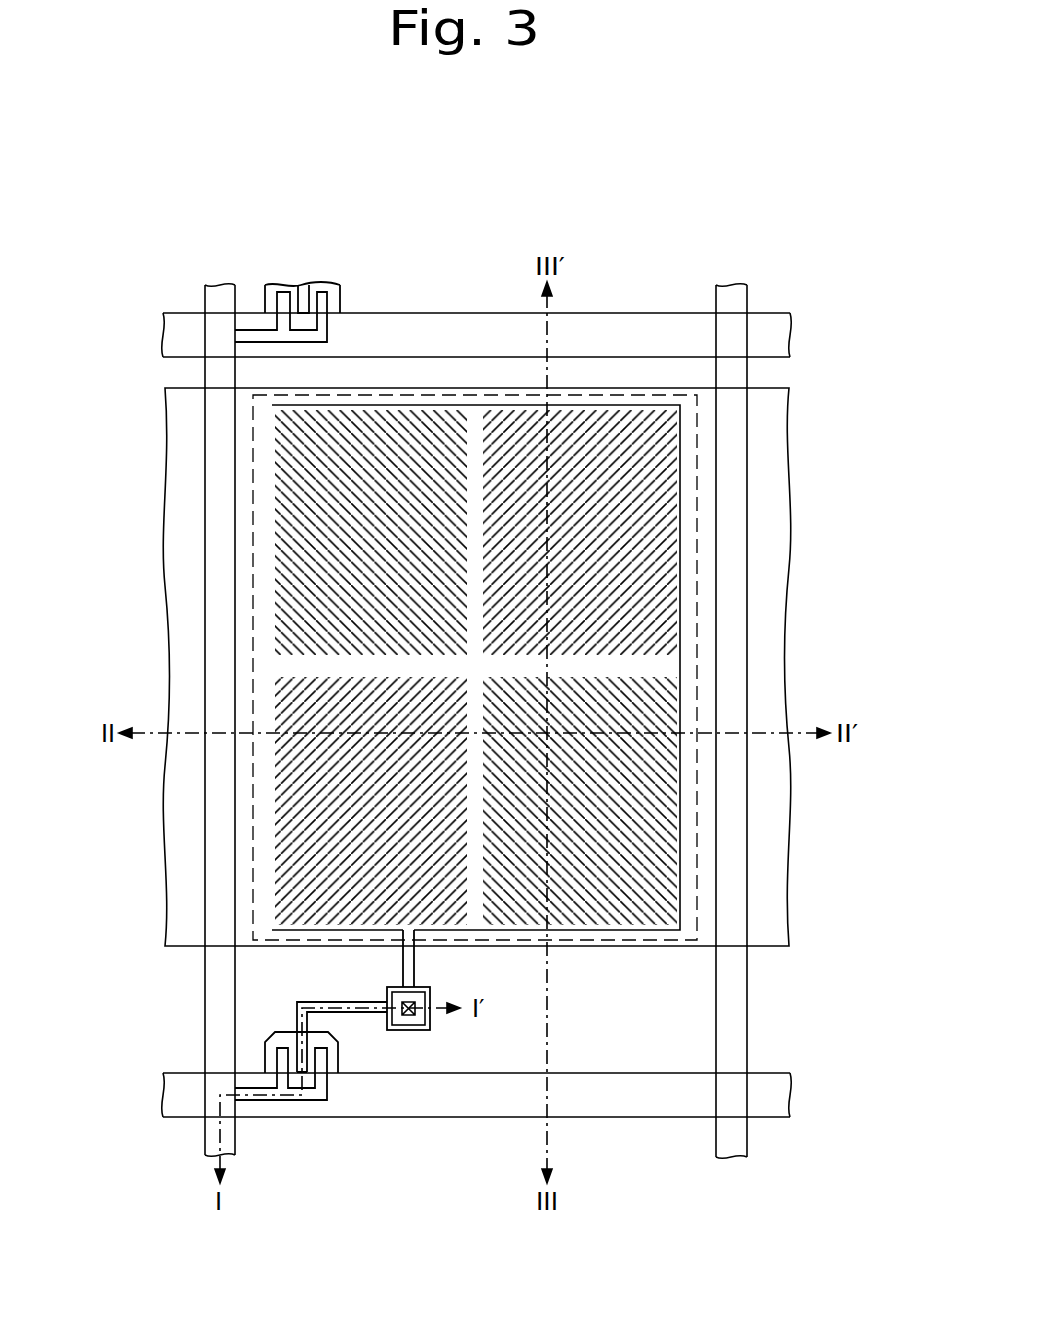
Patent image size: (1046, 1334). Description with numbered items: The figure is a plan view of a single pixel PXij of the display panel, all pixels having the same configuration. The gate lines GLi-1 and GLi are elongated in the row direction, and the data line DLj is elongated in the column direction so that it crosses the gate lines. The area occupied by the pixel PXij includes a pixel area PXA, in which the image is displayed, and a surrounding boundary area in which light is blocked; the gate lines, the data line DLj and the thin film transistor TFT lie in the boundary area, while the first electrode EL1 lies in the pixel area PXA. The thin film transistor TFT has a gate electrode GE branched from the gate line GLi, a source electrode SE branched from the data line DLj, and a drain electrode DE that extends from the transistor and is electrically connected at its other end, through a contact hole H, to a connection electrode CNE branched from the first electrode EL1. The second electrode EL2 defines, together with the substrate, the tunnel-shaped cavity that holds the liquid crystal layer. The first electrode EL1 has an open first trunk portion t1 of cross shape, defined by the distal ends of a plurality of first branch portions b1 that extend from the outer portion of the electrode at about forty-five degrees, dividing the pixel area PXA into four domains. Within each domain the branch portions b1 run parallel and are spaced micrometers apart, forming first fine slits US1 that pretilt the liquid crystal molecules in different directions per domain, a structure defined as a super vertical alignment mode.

The pixel PXij is at (794, 210).
The data line DLj is at (218, 290).
The gate line GLi-1 is at (170, 337).
The gate line GLi is at (170, 1097).
The first fine slits US1 is at (568, 667).
The first branch portions b1 is at (655, 497).
The second electrode EL2 is at (776, 579).
The first electrode EL1 is at (680, 625).
The pixel area PXA is at (697, 678).
The open first trunk portion t1 is at (475, 425).
The connection electrode CNE is at (414, 965).
The contact hole H is at (408, 1014).
The drain electrode DE is at (380, 1180).
The source electrode SE is at (323, 1077).
The gate electrode GE is at (340, 1058).
The thin film transistor TFT is at (311, 1113).